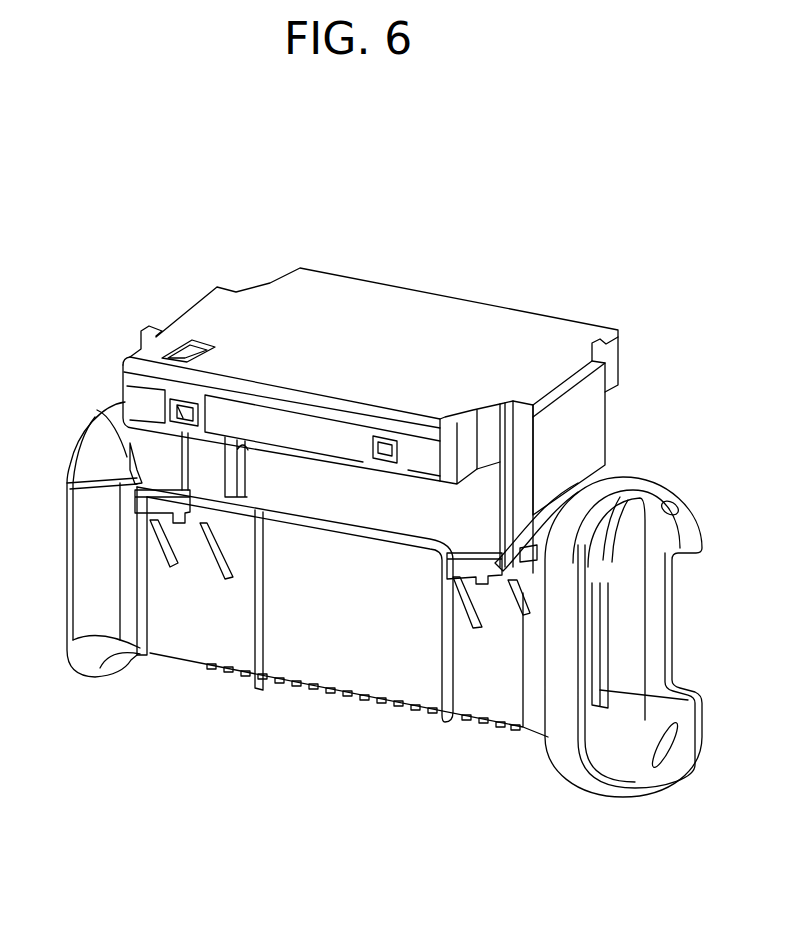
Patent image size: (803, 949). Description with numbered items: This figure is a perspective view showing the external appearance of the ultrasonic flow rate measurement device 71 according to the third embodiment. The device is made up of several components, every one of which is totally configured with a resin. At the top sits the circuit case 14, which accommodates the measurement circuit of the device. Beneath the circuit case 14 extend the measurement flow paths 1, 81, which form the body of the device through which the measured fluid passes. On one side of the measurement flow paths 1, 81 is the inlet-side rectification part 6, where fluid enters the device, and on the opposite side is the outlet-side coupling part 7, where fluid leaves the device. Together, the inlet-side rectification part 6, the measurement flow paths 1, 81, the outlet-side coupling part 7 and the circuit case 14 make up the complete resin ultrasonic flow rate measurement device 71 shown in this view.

The circuit case 14 is at (209, 318).
The inlet-side rectification part 6 is at (68, 667).
The outlet-side coupling part 7 is at (623, 795).
The measurement flow path 1 is at (383, 703).
The measurement flow path 81 is at (363, 697).
The ultrasonic flow rate measurement device 71 is at (325, 843).